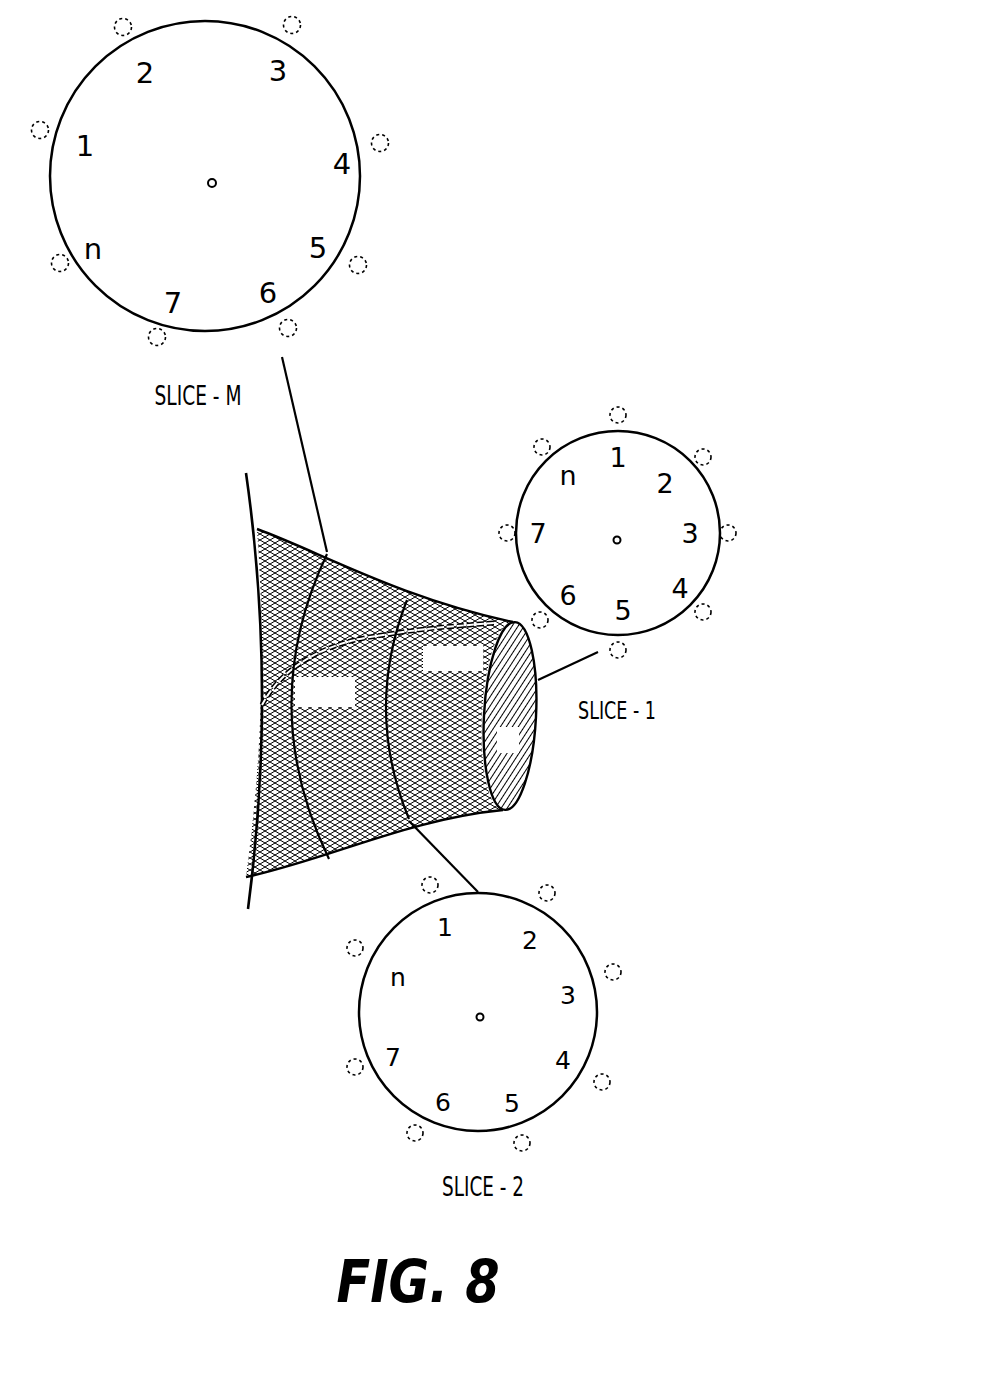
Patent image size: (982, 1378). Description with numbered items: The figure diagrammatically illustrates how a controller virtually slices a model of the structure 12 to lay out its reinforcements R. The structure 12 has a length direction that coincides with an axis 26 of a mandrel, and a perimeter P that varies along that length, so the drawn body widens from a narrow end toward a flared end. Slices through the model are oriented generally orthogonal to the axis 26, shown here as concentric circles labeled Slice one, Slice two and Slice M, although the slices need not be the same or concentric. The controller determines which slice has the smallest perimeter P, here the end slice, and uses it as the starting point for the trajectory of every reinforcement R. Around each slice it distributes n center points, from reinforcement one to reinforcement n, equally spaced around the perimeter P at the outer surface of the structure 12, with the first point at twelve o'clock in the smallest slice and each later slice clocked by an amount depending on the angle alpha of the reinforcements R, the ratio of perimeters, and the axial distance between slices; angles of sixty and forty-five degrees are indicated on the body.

The structure 12 is at (252, 965).
The axis 26 is at (486, 711).
The reinforcement R is at (300, 28).
The perimeter P is at (406, 723).